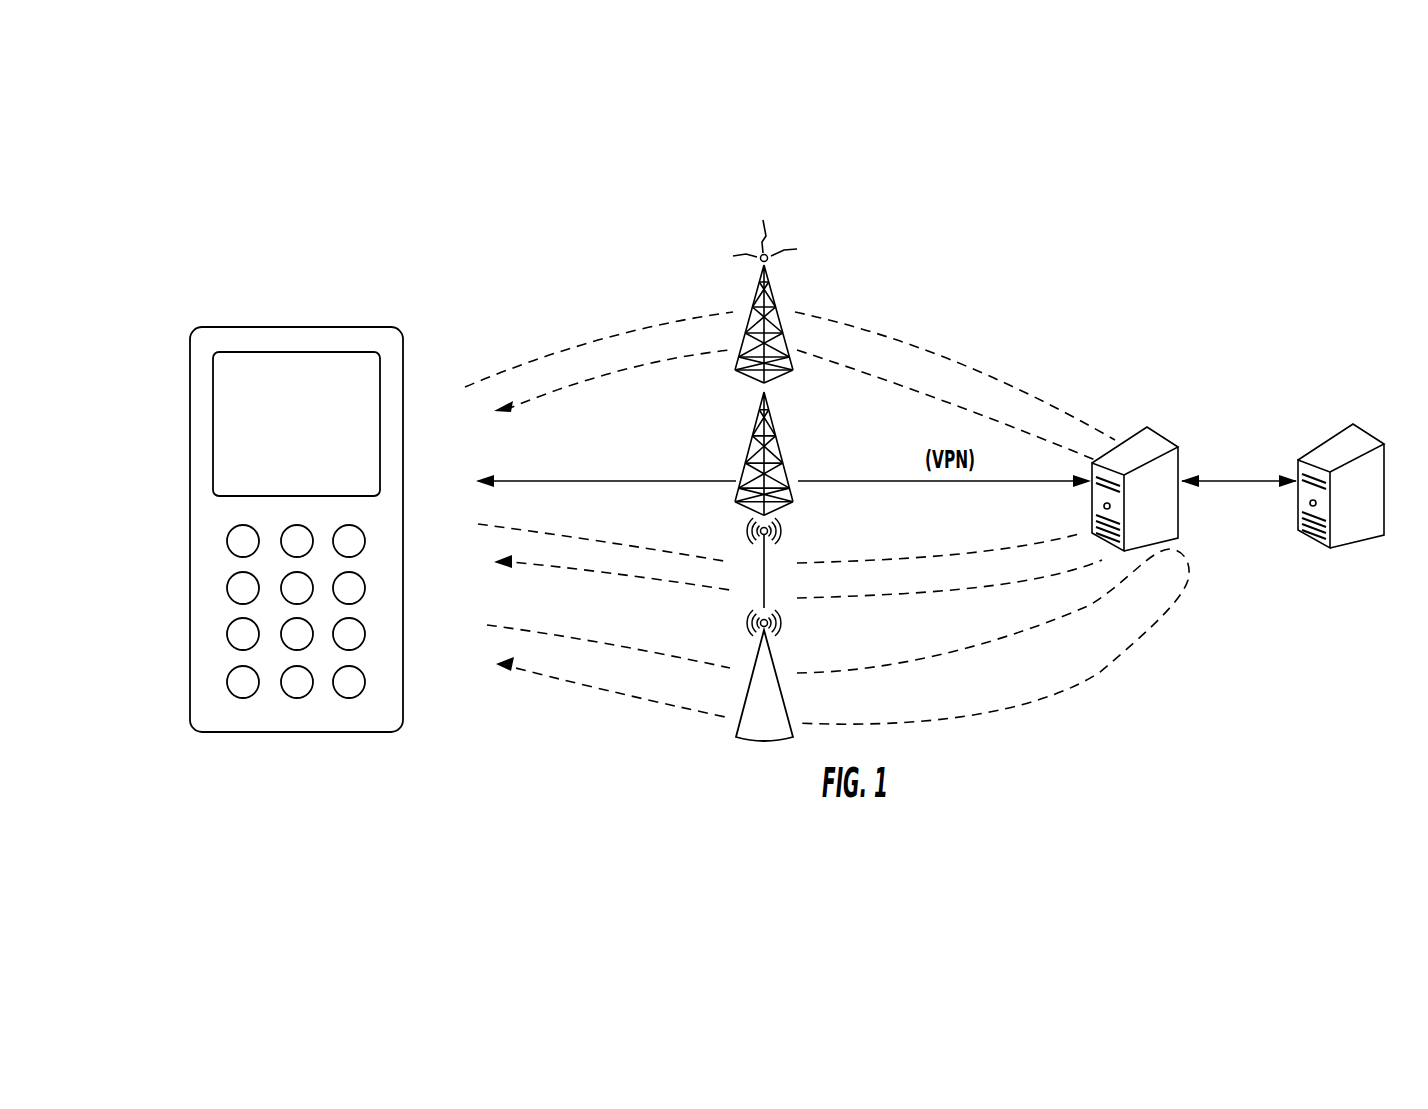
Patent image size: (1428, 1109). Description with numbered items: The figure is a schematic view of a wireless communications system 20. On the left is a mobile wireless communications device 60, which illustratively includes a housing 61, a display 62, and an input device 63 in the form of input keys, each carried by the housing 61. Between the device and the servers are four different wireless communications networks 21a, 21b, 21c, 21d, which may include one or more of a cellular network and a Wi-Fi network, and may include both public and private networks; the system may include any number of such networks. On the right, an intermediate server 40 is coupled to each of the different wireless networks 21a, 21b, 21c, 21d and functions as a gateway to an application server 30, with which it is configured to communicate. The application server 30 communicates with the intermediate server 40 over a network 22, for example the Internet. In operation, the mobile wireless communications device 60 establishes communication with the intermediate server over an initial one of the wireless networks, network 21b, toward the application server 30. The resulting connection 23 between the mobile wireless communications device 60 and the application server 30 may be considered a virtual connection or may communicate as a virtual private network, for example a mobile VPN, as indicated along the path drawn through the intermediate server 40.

The wireless communications system 20 is at (405, 280).
The mobile wireless communications device 60 is at (288, 316).
The housing 61 is at (190, 386).
The display 62 is at (237, 431).
The input device 63 is at (230, 590).
The wireless communications network 21a is at (775, 295).
The wireless communications network 21b is at (777, 437).
The wireless communications network 21c is at (764, 580).
The wireless communications network 21d is at (762, 745).
The intermediate server 40 is at (1152, 418).
The application server 30 is at (1350, 560).
The network 22 is at (1230, 478).
The connection 23 is at (1035, 482).